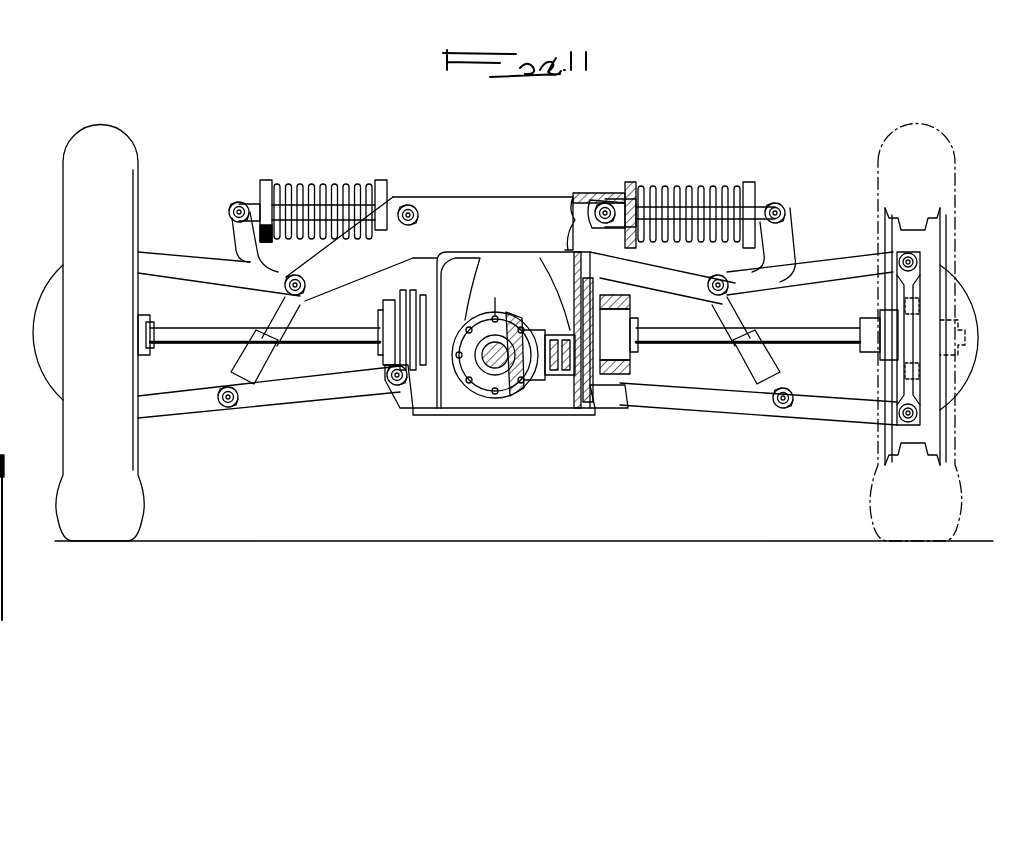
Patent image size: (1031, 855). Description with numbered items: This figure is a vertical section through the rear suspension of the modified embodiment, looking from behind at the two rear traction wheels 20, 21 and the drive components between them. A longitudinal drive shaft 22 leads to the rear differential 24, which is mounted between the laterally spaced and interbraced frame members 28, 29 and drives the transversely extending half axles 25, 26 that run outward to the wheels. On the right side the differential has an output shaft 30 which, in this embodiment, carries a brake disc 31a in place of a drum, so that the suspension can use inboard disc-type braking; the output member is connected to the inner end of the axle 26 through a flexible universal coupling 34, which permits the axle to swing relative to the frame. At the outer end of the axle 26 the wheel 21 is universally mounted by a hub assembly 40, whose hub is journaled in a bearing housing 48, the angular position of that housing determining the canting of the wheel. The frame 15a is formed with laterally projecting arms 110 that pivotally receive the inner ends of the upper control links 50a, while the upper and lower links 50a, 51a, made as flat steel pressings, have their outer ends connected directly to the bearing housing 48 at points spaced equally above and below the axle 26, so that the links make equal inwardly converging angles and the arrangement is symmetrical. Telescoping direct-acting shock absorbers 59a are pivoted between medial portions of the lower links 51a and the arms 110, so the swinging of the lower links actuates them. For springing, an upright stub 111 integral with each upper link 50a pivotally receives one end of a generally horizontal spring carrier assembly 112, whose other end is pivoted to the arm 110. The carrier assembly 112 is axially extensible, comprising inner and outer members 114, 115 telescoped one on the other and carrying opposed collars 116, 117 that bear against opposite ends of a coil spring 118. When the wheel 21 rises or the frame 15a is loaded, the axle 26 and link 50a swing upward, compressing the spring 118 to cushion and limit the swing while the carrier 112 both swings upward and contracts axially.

The rear traction wheel 20 is at (56, 209).
The rear traction wheel 21 is at (971, 218).
The hub assembly 40 is at (982, 309).
The bearing housing 48 is at (877, 360).
The frame 15a is at (520, 192).
The laterally projecting arm 110 is at (352, 277).
The frame member 28 is at (446, 256).
The drive shaft 22 is at (490, 345).
The output shaft 30 is at (528, 320).
The brake disc 31a is at (420, 292).
The flexible universal coupling 34 is at (635, 306).
The frame member 29 is at (566, 407).
The rear differential 24 is at (460, 392).
The half axle 25 is at (320, 332).
The half axle 26 is at (815, 335).
The upper control link 50a is at (182, 260).
The upright stub 111 is at (232, 228).
The lower control link 51a is at (315, 388).
The shock absorber 59a is at (262, 318).
The spring carrier assembly 112 is at (348, 162).
The collar 117 is at (262, 184).
The coil spring 118 is at (305, 190).
The outer member 115 is at (360, 200).
The collar 116 is at (385, 190).
The inner member 114 is at (762, 190).